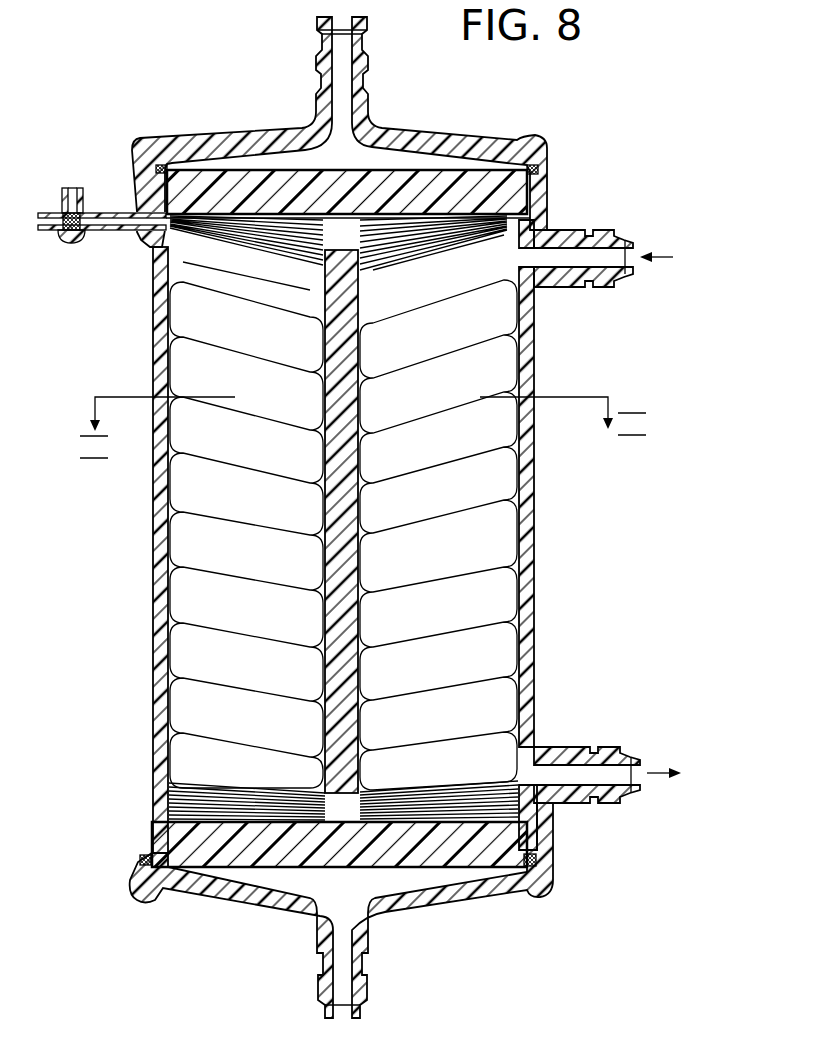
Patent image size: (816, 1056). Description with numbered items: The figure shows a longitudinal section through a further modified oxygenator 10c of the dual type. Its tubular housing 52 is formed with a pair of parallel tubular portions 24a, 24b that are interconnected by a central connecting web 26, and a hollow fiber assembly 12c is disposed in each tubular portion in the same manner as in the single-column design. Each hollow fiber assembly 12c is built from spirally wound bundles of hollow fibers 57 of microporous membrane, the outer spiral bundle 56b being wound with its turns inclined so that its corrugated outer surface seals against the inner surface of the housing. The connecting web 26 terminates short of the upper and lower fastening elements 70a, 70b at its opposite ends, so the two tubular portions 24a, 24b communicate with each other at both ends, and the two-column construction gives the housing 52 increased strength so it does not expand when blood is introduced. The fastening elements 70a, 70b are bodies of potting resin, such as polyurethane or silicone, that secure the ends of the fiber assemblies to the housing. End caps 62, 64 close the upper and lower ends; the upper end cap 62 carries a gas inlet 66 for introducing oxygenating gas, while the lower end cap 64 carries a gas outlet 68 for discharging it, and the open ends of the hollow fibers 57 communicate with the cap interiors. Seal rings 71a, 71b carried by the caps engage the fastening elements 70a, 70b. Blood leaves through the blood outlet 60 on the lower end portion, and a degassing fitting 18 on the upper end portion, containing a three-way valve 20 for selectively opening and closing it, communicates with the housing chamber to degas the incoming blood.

The oxygenator 10c is at (236, 120).
The hollow fiber assembly 12c is at (534, 519).
The degassing fitting 18 is at (112, 213).
The three-way valve 20 is at (72, 243).
The tubular portion 24a is at (535, 340).
The tubular portion 24b is at (155, 344).
The connecting web 26 is at (360, 506).
The tubular housing 52 is at (535, 435).
The outer spiral bundle 56b is at (510, 647).
The hollow fibers 57 is at (223, 785).
The blood outlet 60 is at (634, 746).
The end cap 62 is at (371, 113).
The end cap 64 is at (378, 917).
The gas inlet 66 is at (360, 27).
The gas outlet 68 is at (623, 230).
The fastening element 70a is at (463, 172).
The fastening element 70b is at (240, 870).
The seal ring 71a is at (548, 157).
The seal ring 71b is at (558, 868).